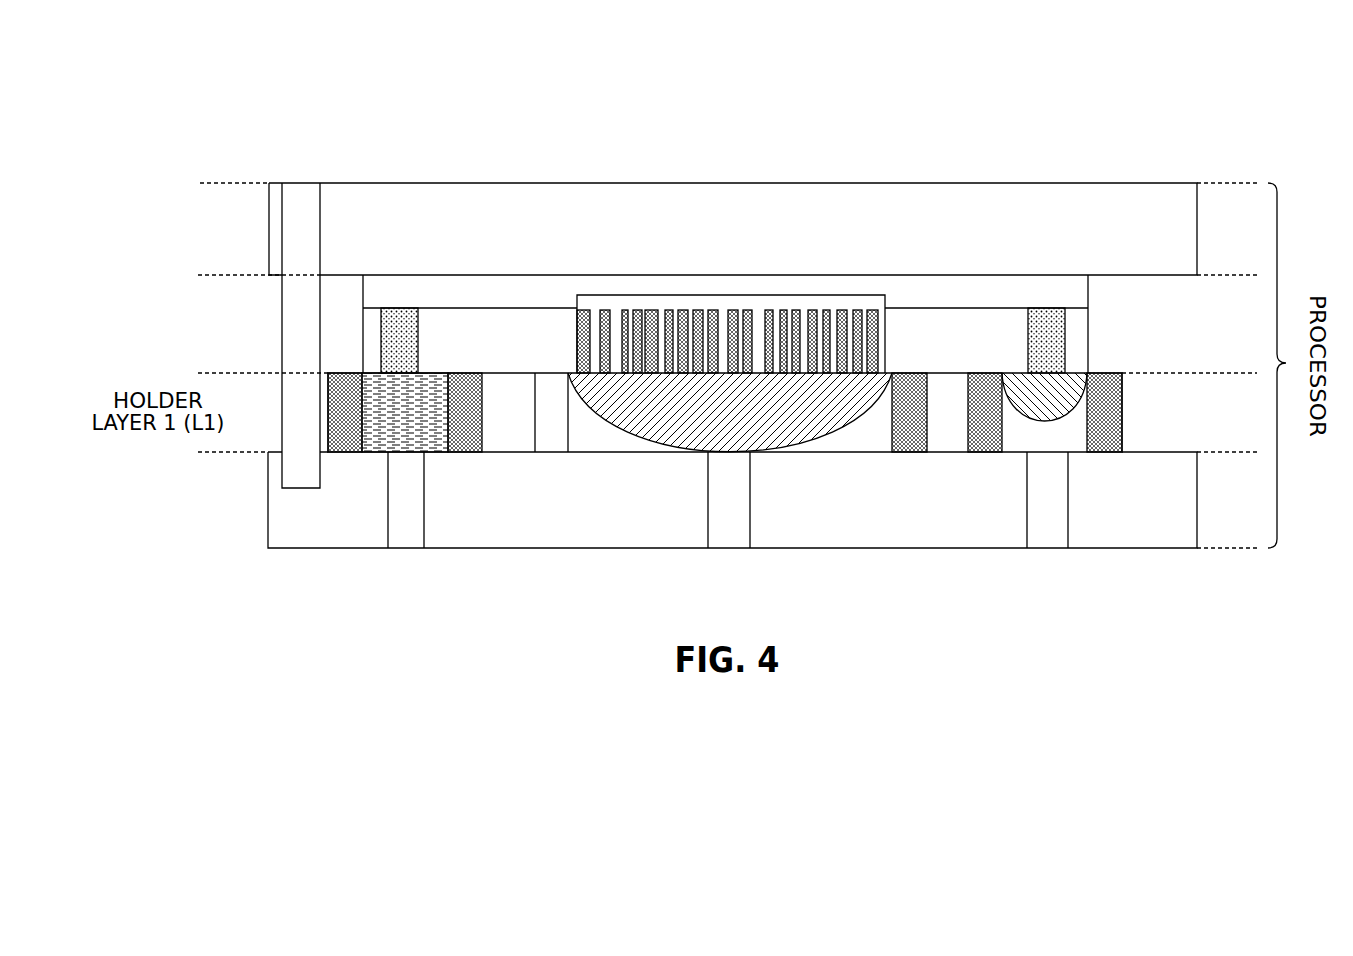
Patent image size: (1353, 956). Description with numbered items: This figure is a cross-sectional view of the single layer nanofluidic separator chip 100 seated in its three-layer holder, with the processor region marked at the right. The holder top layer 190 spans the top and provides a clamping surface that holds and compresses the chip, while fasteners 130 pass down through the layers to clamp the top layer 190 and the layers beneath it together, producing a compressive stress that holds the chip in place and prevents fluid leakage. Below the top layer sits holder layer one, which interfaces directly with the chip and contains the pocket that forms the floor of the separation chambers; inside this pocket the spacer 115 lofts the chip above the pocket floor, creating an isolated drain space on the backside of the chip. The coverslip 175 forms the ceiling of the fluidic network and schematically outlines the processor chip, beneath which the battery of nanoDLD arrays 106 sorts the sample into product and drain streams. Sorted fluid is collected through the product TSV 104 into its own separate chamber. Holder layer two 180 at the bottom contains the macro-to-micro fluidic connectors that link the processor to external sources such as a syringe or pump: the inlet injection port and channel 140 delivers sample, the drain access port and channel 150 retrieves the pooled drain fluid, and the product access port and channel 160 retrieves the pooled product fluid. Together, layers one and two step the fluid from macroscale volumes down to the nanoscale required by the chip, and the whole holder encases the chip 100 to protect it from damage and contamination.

The single layer nanofluidic separator chip 100 is at (348, 347).
The product TSV 104 is at (1045, 358).
The nanoDLD arrays 106 is at (730, 380).
The spacer 115 is at (465, 425).
The fasteners 130 is at (305, 215).
The inlet injection port + channel(s) 140 is at (404, 539).
The drain access port + channel(s) 150 is at (728, 539).
The product access port + channel(s) 160 is at (1052, 539).
The coverslip 175 is at (824, 295).
The holder layer 2 (L2) 180 is at (645, 500).
The holder top layer 190 is at (647, 229).